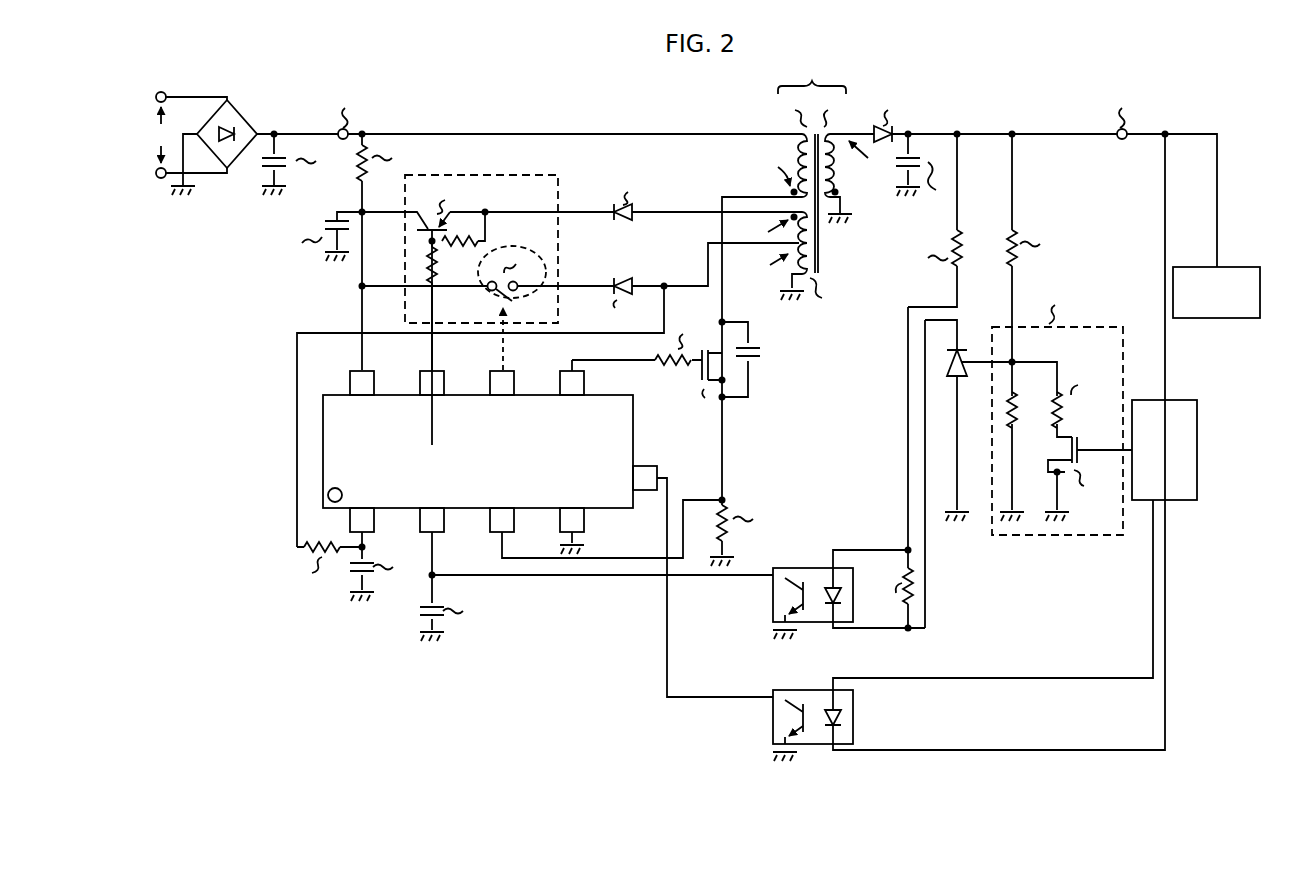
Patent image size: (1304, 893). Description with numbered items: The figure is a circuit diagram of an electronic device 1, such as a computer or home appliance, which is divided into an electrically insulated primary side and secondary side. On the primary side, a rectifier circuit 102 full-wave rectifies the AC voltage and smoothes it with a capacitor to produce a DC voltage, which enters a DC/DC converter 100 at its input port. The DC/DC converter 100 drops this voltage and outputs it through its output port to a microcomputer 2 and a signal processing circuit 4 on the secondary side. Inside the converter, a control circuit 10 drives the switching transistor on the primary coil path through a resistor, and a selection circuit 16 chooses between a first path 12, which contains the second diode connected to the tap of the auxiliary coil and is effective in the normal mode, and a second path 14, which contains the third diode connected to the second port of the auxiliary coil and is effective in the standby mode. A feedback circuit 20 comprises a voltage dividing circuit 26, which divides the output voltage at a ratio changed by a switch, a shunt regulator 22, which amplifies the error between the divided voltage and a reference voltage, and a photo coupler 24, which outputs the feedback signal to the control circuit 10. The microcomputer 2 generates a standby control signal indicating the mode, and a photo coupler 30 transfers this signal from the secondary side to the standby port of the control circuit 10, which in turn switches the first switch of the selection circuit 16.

The electronic device 1 is at (1195, 81).
The microcomputer 2 is at (1197, 470).
The signal processing circuit 4 is at (1240, 318).
The control circuit 10 is at (634, 432).
The first path 12 is at (573, 283).
The second path 14 is at (573, 209).
The selection circuit 16 is at (510, 175).
The feedback circuit 20 is at (758, 638).
The shunt regulator 22 is at (966, 382).
The photo coupler 24 is at (772, 607).
The voltage dividing circuit 26 is at (1075, 225).
The photo coupler 30 is at (772, 717).
The DC/DC converter 100 is at (1125, 760).
The rectifier circuit 102 is at (236, 112).